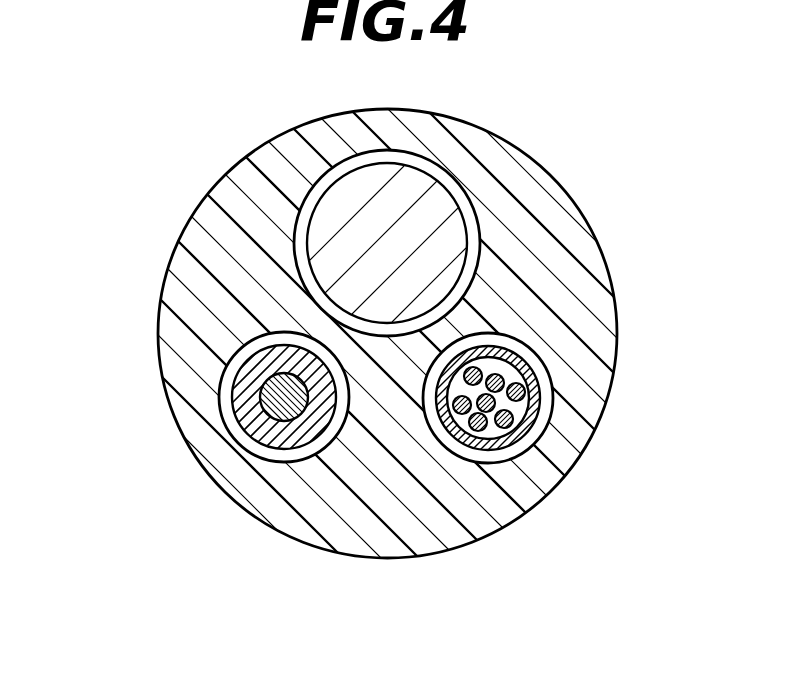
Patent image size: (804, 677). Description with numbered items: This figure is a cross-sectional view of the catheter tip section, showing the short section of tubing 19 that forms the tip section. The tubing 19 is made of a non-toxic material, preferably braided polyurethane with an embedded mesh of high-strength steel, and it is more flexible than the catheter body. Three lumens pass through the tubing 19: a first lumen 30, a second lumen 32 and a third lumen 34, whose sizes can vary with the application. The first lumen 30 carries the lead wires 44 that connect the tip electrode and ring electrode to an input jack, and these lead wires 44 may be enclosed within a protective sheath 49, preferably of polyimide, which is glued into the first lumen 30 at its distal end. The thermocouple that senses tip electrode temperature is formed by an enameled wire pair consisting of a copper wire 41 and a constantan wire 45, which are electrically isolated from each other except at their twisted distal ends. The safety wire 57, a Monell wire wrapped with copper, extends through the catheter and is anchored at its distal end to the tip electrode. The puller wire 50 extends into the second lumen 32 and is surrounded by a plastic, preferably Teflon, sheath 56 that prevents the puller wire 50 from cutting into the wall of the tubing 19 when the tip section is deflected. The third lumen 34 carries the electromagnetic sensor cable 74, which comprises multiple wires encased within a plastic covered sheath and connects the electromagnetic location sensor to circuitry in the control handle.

The tubing 19 is at (227, 233).
The electromagnetic sensor cable 74 is at (353, 224).
The third lumen 34 is at (458, 198).
The second lumen 32 is at (240, 353).
The puller wire 50 is at (282, 397).
The sheath 56 is at (273, 435).
The first lumen 30 is at (543, 370).
The lead wire 44 is at (518, 395).
The constantan wire 45 is at (478, 370).
The protective sheath 49 is at (520, 440).
The copper wire 41 is at (476, 430).
The safety wire 57 is at (487, 432).